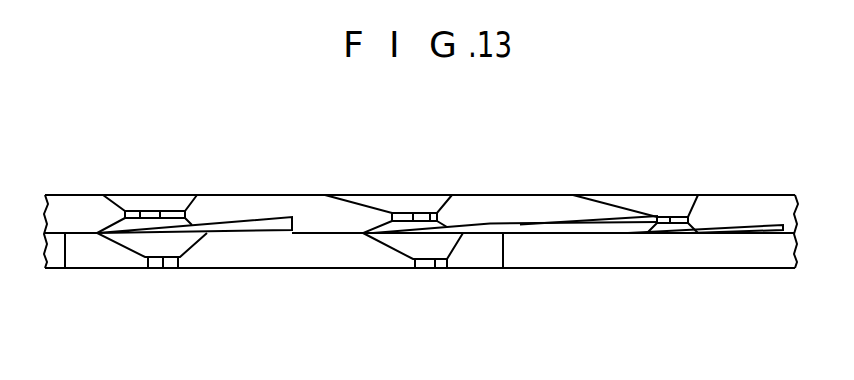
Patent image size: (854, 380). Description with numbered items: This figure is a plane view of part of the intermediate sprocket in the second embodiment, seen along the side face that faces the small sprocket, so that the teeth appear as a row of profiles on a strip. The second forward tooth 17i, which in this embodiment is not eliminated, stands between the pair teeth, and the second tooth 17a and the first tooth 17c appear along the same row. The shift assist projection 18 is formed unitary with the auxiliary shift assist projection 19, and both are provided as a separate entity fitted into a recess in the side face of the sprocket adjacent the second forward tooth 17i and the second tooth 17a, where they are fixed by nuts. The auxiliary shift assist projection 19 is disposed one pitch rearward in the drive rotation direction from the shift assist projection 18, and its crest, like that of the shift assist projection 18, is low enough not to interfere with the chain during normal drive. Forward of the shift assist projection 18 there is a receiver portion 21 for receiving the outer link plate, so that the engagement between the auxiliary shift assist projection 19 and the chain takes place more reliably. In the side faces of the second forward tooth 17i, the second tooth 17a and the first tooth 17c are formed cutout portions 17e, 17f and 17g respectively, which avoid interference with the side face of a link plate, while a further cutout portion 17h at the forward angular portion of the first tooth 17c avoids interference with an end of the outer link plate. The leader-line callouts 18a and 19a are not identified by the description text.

The second tooth 17a is at (413, 212).
The first tooth 17c is at (670, 217).
The cutout portion 17e is at (237, 236).
The cutout portion 17f is at (479, 237).
The cutout portion 17g is at (728, 241).
The cutout portion 17h is at (625, 237).
The second forward tooth 17i is at (157, 211).
The shift assist projection 18 is at (165, 268).
The lower element body 18a is at (147, 243).
The auxiliary shift assist projection 19 is at (431, 268).
The lower element body 19a is at (442, 242).
The receiver portion 21 is at (113, 257).